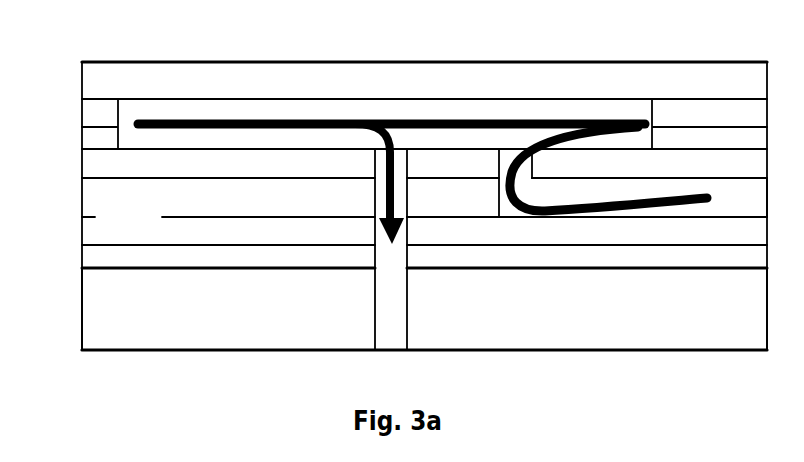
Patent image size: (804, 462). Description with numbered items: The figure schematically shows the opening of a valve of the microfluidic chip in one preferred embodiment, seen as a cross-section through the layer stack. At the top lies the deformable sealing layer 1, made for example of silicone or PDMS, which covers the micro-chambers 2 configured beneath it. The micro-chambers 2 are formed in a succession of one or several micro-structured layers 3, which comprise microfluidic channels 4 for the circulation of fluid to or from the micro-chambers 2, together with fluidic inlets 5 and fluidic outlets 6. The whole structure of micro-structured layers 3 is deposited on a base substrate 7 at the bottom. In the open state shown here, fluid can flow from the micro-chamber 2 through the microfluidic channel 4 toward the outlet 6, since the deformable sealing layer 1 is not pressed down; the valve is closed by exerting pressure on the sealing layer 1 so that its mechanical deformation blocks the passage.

The deformable sealing layer 1 is at (197, 80).
The micro-chamber 2 is at (237, 142).
The micro-structured layer 3 is at (52, 102).
The microfluidic channel 4 is at (560, 193).
The fluidic inlet 5 is at (755, 195).
The fluidic outlet 6 is at (394, 256).
The base substrate 7 is at (172, 308).